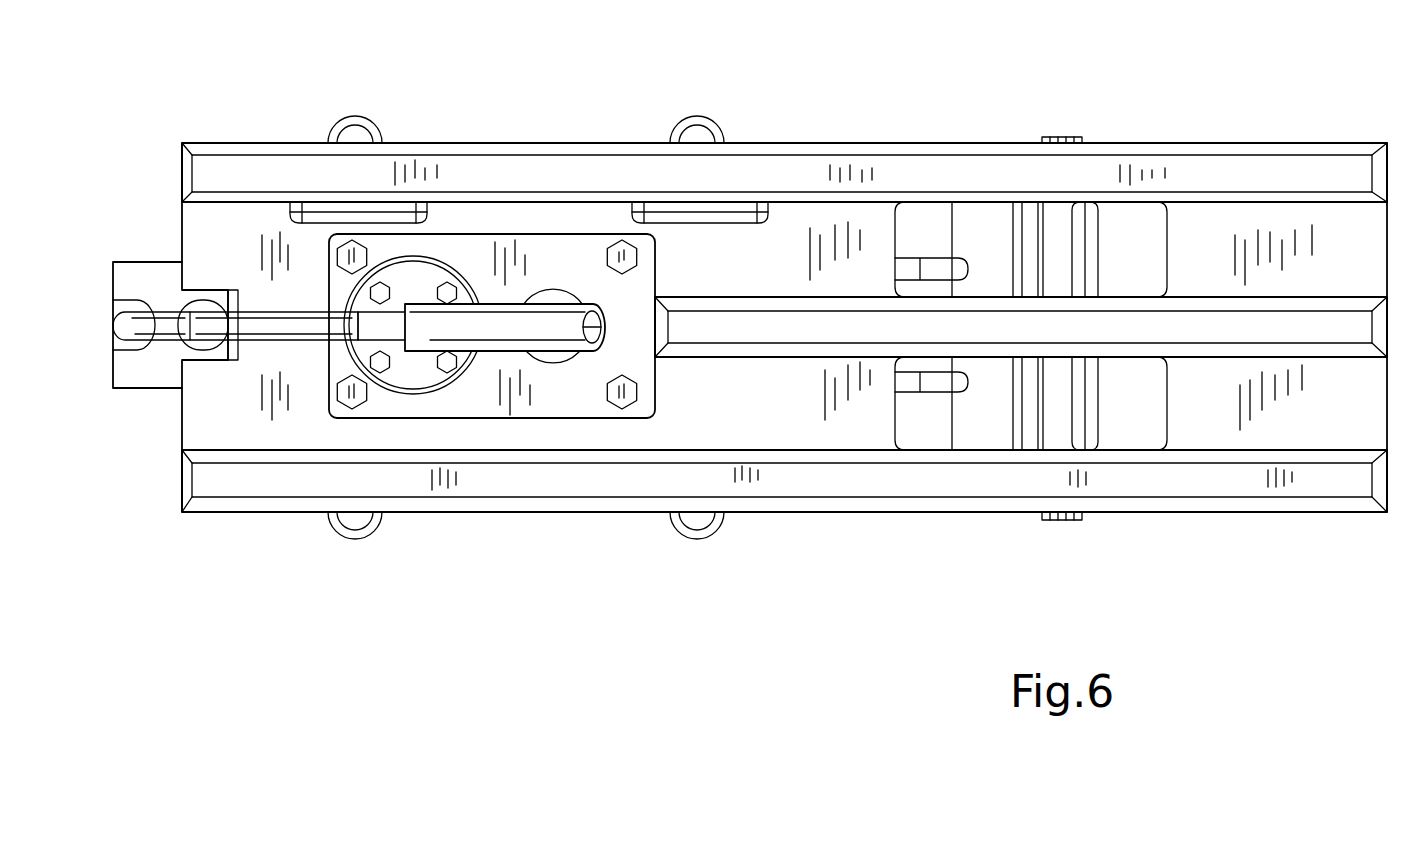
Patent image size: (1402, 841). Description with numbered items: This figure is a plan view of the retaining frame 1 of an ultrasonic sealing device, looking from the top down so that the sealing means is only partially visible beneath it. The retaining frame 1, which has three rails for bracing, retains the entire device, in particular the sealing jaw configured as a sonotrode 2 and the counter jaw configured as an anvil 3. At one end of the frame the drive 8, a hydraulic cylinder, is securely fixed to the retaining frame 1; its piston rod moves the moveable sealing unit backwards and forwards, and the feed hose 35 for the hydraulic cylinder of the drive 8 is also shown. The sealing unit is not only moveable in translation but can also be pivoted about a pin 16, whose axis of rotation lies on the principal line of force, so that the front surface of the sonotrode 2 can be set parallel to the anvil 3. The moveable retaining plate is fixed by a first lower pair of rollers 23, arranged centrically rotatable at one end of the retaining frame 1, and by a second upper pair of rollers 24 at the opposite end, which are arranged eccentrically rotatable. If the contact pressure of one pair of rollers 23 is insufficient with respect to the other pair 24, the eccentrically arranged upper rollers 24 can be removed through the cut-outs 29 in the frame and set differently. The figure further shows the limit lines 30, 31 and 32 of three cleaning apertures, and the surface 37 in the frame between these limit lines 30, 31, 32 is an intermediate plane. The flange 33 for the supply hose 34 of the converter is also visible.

The retaining frame 1 is at (1220, 220).
The sonotrode 2 is at (922, 430).
The anvil 3 is at (1125, 430).
The drive 8 is at (132, 282).
The pin 16 is at (548, 300).
The first lower pair of rollers 23 is at (697, 522).
The second upper pair of rollers 24 is at (354, 140).
The cut-outs 29 is at (730, 205).
The limit line 30 is at (492, 420).
The limit line 31 is at (1172, 235).
The limit line 32 is at (1168, 423).
The flange 33 is at (407, 375).
The supply hose 34 is at (572, 338).
The feed hose 35 is at (160, 335).
The intermediate plane 37 is at (790, 408).